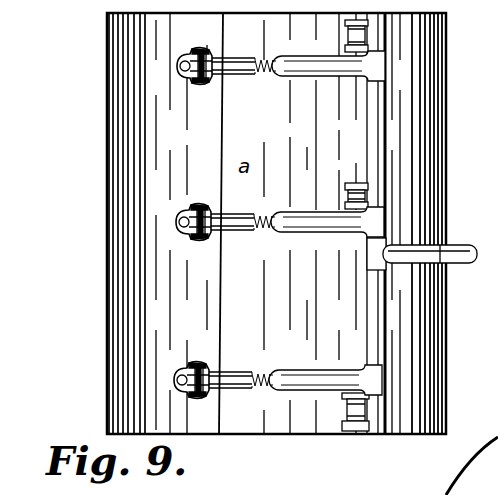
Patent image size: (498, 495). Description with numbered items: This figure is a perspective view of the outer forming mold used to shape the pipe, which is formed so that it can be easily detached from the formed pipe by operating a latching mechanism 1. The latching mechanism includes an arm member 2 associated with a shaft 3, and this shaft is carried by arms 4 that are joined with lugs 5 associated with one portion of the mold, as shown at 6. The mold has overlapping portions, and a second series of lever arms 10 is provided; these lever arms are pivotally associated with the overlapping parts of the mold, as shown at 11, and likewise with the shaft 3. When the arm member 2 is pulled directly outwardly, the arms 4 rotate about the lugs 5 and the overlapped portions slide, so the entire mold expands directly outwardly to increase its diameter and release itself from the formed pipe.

The latching mechanism 1 is at (386, 247).
The arm member 2 is at (422, 264).
The shaft 3 is at (386, 346).
The arms 4 is at (364, 198).
The lugs 5 is at (366, 185).
The mold portion 6 is at (353, 430).
The lever arms 10 is at (300, 76).
The pivot 11 is at (209, 80).